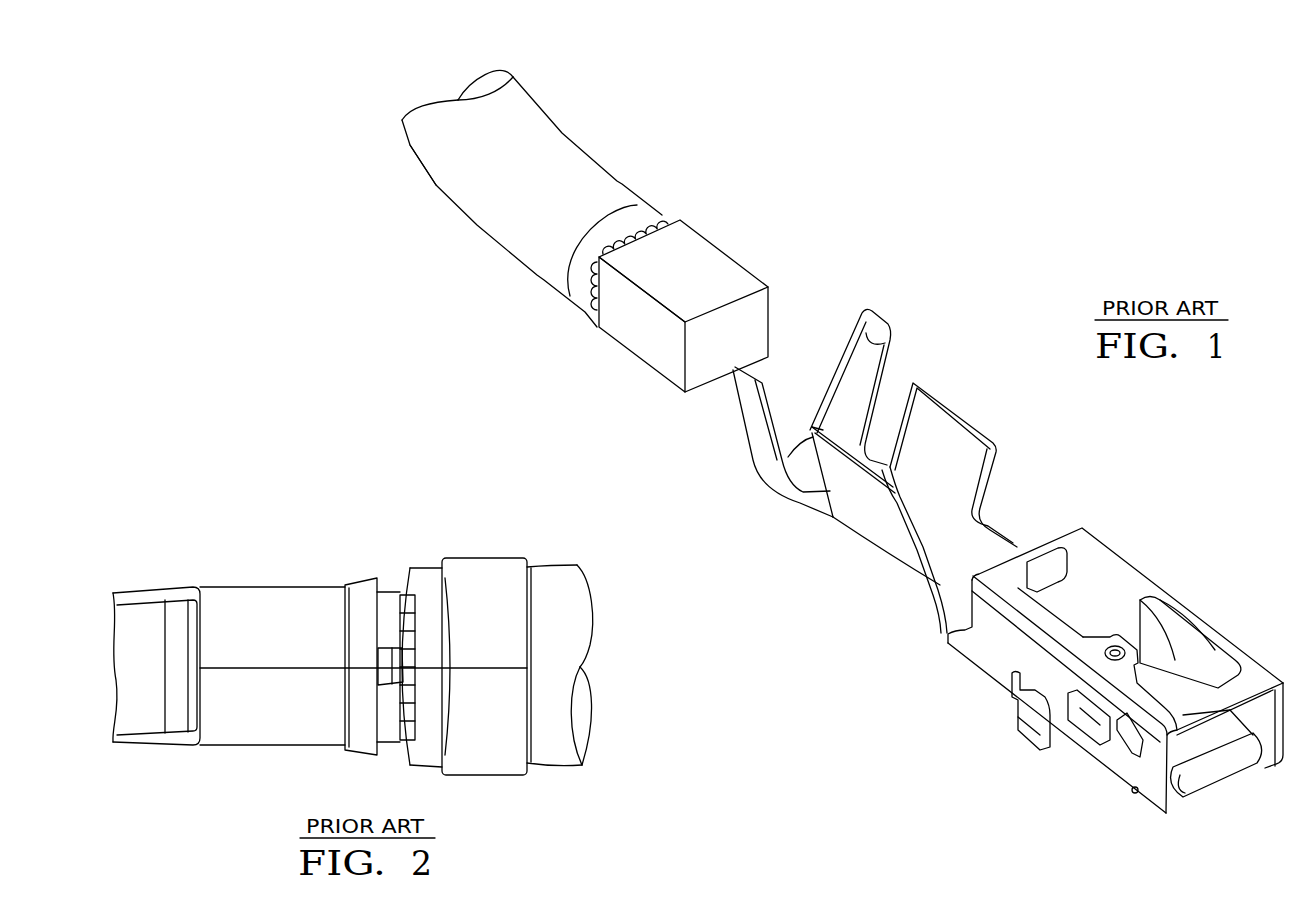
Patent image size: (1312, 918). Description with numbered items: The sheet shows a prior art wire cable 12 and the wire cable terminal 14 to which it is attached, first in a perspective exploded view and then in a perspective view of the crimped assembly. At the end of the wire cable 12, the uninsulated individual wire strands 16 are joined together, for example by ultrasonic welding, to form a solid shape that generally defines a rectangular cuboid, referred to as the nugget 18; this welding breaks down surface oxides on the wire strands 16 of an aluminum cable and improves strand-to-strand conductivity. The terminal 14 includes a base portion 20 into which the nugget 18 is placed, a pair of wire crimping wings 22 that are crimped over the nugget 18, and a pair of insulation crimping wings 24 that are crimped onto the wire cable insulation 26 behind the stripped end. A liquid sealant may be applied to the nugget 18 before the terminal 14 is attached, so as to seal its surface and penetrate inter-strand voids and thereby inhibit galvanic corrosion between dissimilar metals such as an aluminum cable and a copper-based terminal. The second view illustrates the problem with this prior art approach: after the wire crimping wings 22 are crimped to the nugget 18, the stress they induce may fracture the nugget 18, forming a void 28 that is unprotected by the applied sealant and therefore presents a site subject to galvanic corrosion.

In FIG. 1, the wire cable 12 is at (614, 127).
In FIG. 2, the wire cable 12 is at (566, 774).
In FIG. 1, the wire cable terminal 14 is at (1192, 580).
In FIG. 2, the wire cable terminal 14 is at (202, 583).
In FIG. 1, the wire strands 16 is at (653, 226).
In FIG. 1, the nugget 18 is at (690, 252).
In FIG. 1, the base portion 20 is at (933, 545).
In FIG. 1, the wire crimping wings 22 is at (856, 500).
In FIG. 2, the wire crimping wings 22 is at (278, 598).
In FIG. 1, the insulation crimping wings 24 is at (868, 338).
In FIG. 2, the insulation crimping wings 24 is at (508, 565).
In FIG. 1, the wire cable insulation 26 is at (483, 208).
In FIG. 2, the void 28 is at (393, 652).